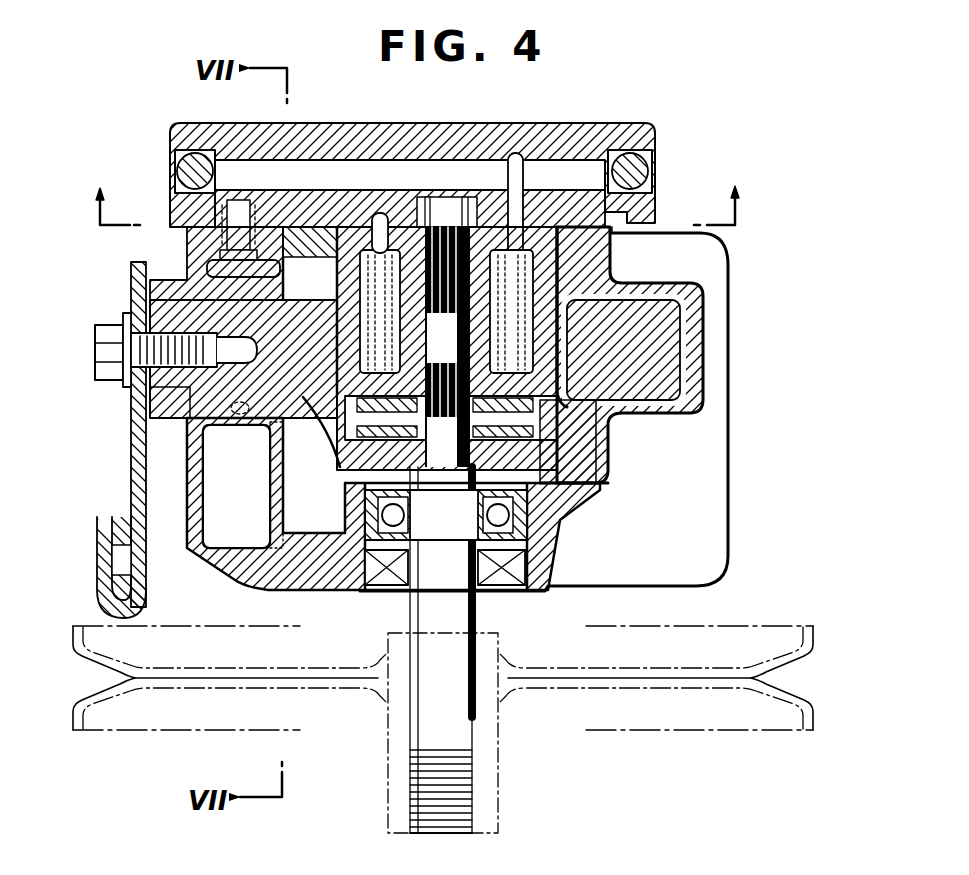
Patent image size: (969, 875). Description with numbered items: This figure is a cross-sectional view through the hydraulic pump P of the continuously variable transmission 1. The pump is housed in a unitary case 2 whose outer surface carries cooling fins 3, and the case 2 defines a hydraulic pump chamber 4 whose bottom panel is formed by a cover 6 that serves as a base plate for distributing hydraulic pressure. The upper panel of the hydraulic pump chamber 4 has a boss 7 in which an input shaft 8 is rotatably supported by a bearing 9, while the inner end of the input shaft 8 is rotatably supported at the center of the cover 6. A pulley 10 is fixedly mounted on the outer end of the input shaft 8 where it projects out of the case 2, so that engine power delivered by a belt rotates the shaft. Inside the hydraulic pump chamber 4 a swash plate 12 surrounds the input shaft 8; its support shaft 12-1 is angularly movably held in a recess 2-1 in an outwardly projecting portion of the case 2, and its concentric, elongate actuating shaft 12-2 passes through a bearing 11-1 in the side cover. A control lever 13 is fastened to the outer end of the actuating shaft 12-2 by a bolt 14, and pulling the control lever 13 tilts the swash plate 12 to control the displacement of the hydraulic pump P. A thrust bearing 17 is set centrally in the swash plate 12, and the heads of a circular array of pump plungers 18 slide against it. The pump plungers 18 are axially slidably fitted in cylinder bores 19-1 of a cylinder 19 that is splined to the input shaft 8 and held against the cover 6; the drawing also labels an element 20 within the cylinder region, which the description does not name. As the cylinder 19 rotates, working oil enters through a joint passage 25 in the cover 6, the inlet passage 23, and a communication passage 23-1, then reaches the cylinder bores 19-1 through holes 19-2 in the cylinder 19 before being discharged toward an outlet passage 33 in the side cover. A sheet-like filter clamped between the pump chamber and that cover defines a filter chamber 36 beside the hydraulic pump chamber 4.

The continuously variable transmission 1 is at (748, 533).
The case 2 is at (730, 427).
The recess 2-1 is at (620, 305).
The cooling fins 3 is at (703, 468).
The hydraulic pump chamber 4 is at (572, 468).
The cover 6 is at (565, 153).
The boss 7 is at (535, 564).
The input shaft 8 is at (480, 620).
The bearing 9 is at (548, 505).
The pulley 10 is at (795, 707).
The bearing 11-1 is at (170, 300).
The swash plate 12 is at (347, 472).
The support shaft 12-1 is at (680, 387).
The actuating shaft 12-2 is at (140, 396).
The control lever 13 is at (135, 455).
The bolt 14 is at (100, 343).
The thrust bearing 17 is at (600, 418).
The pump plungers 18 is at (322, 458).
The cylinder 19 is at (500, 232).
The cylinder bores 19-1 is at (330, 300).
The holes 19-2 is at (597, 243).
The return spring 20 is at (384, 222).
The inlet passage 23 is at (463, 172).
The communication passage 23-1 is at (545, 217).
The joint passage 25 is at (237, 215).
The outlet passage 33 is at (240, 405).
The filter chamber 36 is at (237, 517).
The hydraulic pump P is at (363, 222).